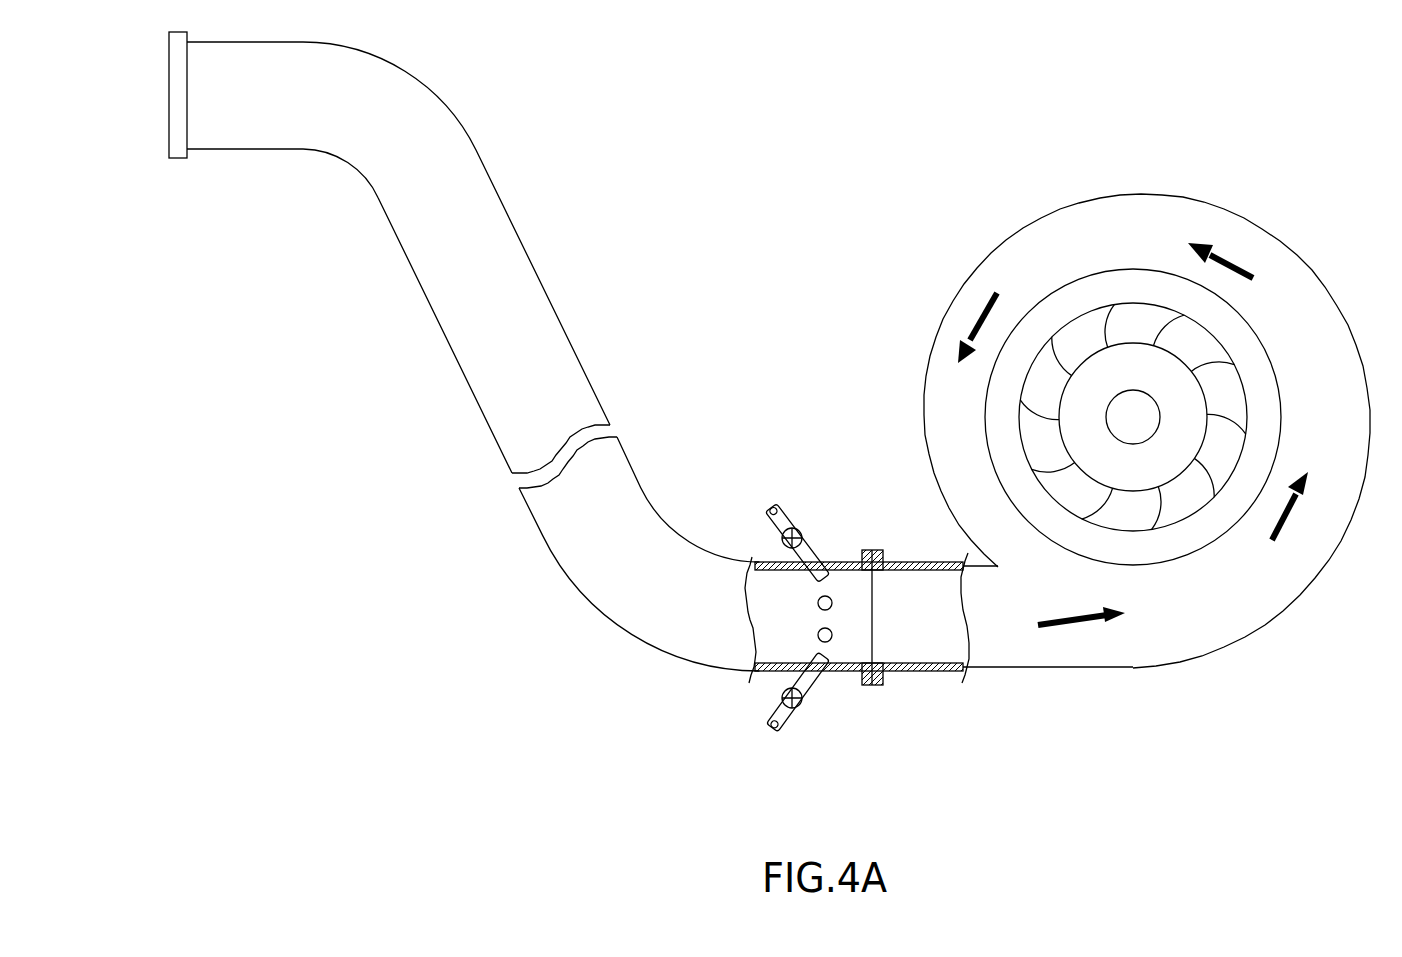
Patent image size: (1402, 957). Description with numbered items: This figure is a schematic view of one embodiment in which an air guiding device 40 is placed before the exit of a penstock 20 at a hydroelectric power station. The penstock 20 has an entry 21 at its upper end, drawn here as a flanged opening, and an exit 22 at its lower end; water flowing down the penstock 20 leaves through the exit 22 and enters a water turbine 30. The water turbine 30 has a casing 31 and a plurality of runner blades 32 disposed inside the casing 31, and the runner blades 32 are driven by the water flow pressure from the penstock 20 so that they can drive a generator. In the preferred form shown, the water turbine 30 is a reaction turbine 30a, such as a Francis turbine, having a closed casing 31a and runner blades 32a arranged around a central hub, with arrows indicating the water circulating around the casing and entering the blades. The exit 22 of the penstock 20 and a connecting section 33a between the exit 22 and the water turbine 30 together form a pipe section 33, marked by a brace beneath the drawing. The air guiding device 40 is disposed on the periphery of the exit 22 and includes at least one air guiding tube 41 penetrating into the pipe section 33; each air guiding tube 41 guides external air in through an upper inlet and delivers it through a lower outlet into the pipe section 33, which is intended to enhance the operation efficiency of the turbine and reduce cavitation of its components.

The penstock 20 is at (493, 192).
The entry 21 is at (168, 91).
The exit 22 is at (868, 614).
The water turbine 30 is at (1146, 398).
The reaction turbine 30a is at (1000, 225).
The casing 31 is at (1133, 342).
The closed casing 31a is at (1133, 417).
The runner blades 32 is at (1191, 354).
The runner blades 32a is at (1220, 377).
The pipe section 33 is at (1012, 745).
The connecting section 33a is at (1001, 657).
The air guiding device 40 is at (814, 571).
The air guiding tube 41 is at (787, 513).